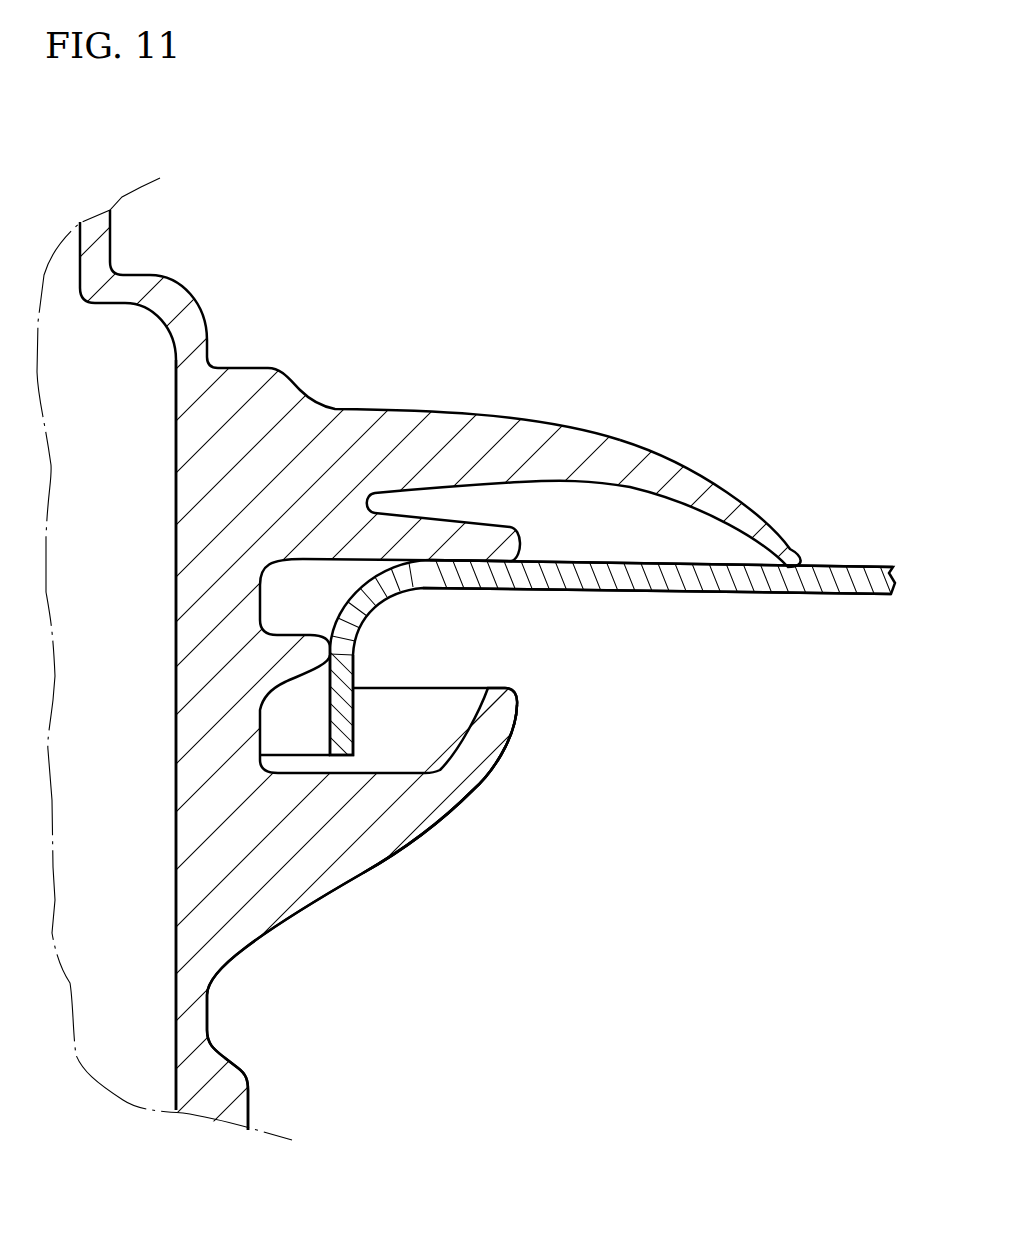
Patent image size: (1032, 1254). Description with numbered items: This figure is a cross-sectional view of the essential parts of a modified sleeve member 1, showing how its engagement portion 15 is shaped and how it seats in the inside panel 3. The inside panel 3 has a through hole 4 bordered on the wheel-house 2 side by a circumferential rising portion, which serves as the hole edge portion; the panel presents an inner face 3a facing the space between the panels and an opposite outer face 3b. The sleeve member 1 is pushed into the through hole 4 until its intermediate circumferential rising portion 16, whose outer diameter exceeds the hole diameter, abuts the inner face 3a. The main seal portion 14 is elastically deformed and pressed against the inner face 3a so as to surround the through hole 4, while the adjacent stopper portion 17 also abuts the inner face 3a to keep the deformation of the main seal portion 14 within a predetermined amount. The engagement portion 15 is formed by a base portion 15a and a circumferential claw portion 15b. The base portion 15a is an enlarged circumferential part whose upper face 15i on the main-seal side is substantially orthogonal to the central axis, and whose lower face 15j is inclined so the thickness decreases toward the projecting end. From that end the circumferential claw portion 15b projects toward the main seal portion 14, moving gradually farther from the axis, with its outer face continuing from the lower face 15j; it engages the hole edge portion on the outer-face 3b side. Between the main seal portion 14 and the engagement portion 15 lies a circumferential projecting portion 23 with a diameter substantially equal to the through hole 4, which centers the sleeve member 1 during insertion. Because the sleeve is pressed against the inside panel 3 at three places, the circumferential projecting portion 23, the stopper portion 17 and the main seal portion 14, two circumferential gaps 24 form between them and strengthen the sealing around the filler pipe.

The sleeve member 1 is at (110, 243).
The wheel house 2 is at (703, 874).
The inside panel 3 is at (855, 566).
The inner face 3a is at (837, 566).
The outer face 3b is at (838, 595).
The through hole 4 is at (303, 715).
The main seal portion 14 is at (692, 477).
The engagement portion 15 is at (393, 830).
The base portion 15a is at (303, 860).
The circumferential claw portion 15b is at (497, 728).
The upper face 15i is at (383, 775).
The lower face 15j is at (357, 877).
The intermediate circumferential rising portion 16 is at (293, 477).
The stopper portion 17 is at (470, 540).
The circumferential projecting portion 23 is at (307, 657).
The circumferential gaps 24 is at (577, 515).